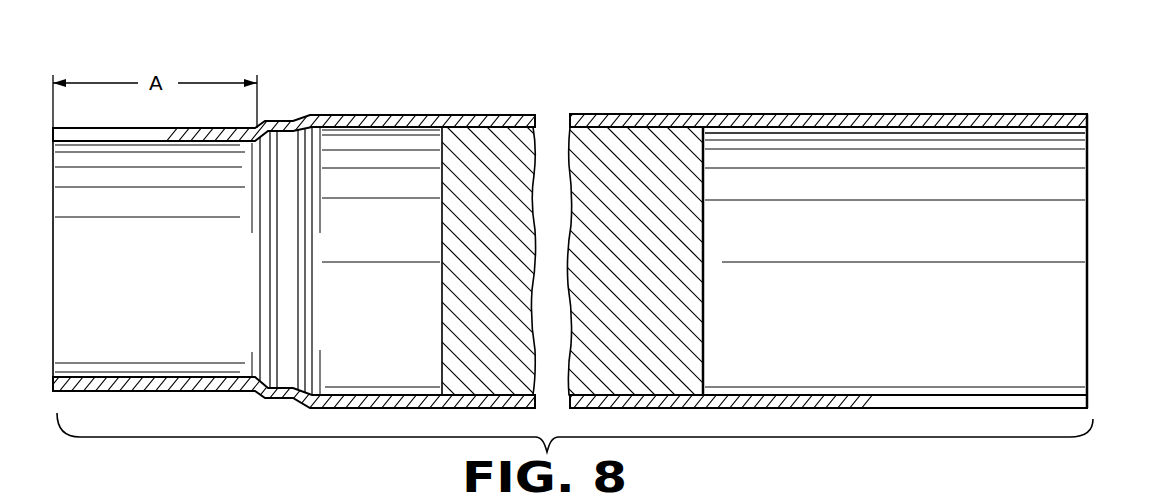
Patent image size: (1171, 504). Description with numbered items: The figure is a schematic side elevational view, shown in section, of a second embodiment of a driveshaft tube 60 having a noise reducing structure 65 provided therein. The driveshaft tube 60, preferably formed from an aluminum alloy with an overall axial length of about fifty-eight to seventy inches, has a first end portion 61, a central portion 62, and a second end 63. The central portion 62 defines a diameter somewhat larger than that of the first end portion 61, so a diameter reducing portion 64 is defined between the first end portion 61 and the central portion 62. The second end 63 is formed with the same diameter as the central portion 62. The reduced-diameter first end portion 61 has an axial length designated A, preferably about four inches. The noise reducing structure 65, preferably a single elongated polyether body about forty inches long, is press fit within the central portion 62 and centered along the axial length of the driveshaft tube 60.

The driveshaft tube 60 is at (585, 244).
The first end portion 61 is at (152, 137).
The central portion 62 is at (752, 127).
The second end 63 is at (1060, 127).
The diameter reducing portion 64 is at (283, 131).
The noise reducing structure 65 is at (687, 291).